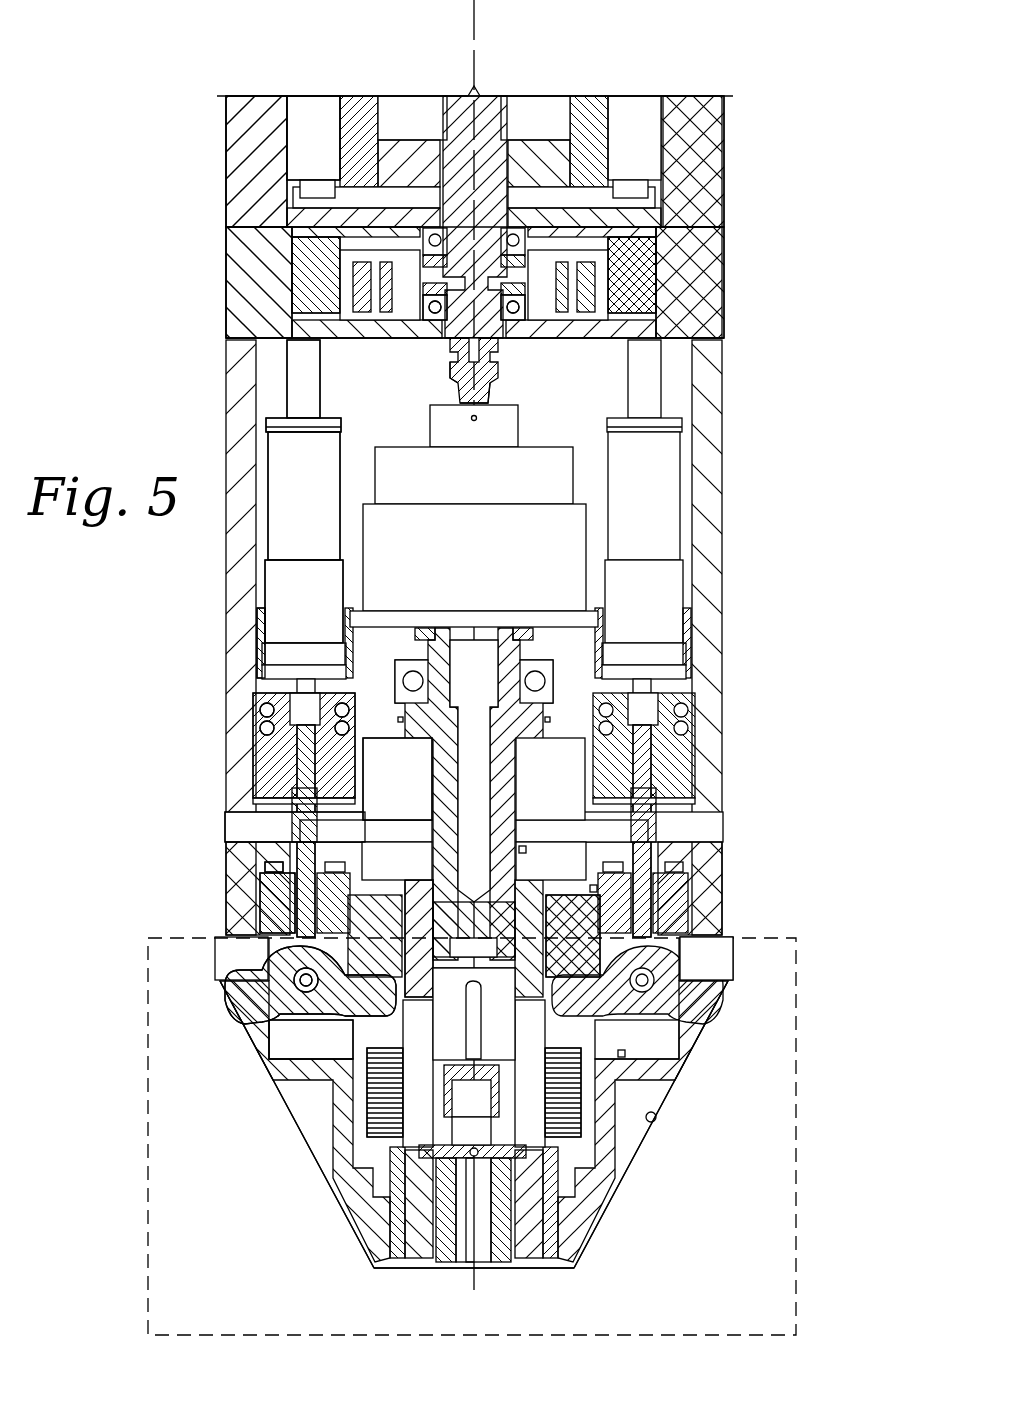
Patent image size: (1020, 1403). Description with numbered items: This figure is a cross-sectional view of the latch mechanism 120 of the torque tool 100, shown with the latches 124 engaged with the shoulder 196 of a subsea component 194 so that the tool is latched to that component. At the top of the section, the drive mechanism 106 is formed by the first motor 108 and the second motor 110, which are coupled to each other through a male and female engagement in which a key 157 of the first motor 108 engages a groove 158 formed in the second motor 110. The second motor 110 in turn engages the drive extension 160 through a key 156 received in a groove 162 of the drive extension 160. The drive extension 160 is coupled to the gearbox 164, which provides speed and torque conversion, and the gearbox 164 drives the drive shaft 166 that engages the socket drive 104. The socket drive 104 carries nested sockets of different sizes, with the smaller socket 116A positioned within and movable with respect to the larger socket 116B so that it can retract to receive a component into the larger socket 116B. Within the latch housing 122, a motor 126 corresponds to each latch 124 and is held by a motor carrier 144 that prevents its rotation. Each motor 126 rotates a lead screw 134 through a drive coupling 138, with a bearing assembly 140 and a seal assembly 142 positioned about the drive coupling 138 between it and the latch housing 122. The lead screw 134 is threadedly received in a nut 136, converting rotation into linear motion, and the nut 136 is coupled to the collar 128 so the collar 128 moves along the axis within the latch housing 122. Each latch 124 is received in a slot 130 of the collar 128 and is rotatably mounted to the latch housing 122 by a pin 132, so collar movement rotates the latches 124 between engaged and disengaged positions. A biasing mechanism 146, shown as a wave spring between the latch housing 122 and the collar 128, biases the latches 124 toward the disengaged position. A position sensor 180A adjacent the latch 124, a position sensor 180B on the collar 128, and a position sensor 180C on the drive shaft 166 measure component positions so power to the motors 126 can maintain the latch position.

The torque tool 100 is at (832, 552).
The socket drive 104 is at (415, 905).
The drive mechanism 106 is at (128, 23).
The first motor 108 is at (228, 160).
The second motor 110 is at (228, 258).
The smaller socket 116A is at (452, 1262).
The larger socket 116B is at (440, 1262).
The latch mechanism 120 is at (185, 1042).
The latch housing 122 is at (310, 1072).
The latch 124 is at (258, 985).
The motor 126 is at (355, 118).
The collar 128 is at (605, 912).
The slot 130 is at (366, 1028).
The pin 132 is at (300, 990).
The lead screw 134 is at (300, 815).
The nut 136 is at (265, 890).
The drive coupling 138 is at (262, 740).
The bearing assembly 140 is at (262, 698).
The seal assembly 142 is at (258, 772).
The motor carrier 144 is at (660, 288).
The biasing mechanism 146 is at (364, 1115).
The key 156 is at (482, 360).
The key 157 is at (492, 300).
The groove 158 is at (432, 305).
The drive extension 160 is at (486, 383).
The groove 162 is at (450, 368).
The gearbox 164 is at (474, 516).
The drive shaft 166 is at (441, 800).
The position sensor 180A is at (625, 1055).
The position sensor 180B is at (598, 888).
The position sensor 180C is at (526, 846).
The subsea component 194 is at (654, 1121).
The shoulder 196 is at (690, 966).